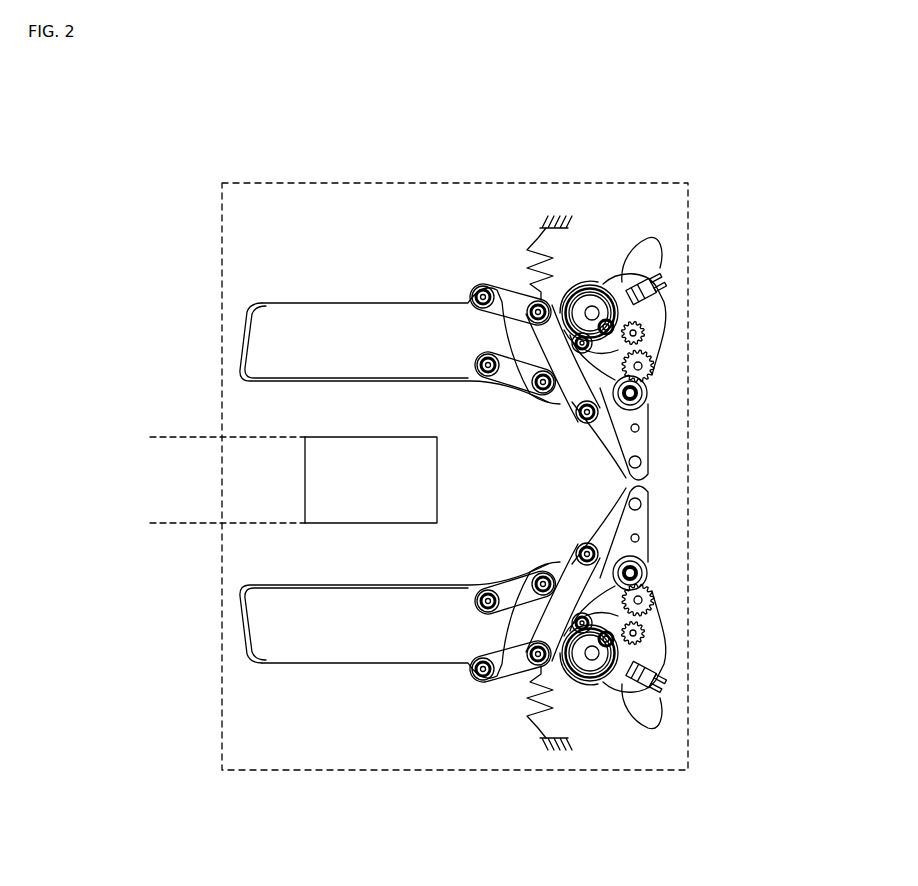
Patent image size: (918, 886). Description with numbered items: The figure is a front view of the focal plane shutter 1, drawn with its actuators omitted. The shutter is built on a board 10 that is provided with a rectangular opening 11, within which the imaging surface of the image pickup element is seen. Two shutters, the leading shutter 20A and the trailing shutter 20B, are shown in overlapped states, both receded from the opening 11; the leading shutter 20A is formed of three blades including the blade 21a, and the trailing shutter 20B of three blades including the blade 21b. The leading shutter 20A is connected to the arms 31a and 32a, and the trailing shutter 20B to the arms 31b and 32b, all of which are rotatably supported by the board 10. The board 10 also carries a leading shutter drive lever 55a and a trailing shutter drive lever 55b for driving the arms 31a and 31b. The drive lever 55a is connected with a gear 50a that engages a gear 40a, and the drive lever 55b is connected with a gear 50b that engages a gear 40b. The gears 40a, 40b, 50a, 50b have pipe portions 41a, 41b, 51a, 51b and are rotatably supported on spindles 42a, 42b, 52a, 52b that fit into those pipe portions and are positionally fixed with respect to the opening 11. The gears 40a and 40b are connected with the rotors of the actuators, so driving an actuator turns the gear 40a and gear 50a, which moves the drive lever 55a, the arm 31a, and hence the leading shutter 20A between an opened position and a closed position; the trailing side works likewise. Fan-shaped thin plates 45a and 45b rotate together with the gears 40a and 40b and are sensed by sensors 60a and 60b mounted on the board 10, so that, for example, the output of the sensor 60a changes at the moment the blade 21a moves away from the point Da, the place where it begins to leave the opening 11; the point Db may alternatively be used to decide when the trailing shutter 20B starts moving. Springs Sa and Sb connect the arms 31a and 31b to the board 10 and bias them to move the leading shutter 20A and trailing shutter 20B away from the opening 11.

The focal plane shutter 1 is at (530, 143).
The board 10 is at (230, 183).
The opening 11 is at (325, 437).
The point Da is at (209, 437).
The point Db is at (209, 523).
The leading shutter 20A is at (400, 698).
The trailing shutter 20B is at (400, 276).
The blade 21a is at (320, 636).
The blade 21b is at (310, 315).
The arm 31a is at (508, 672).
The arm 31b is at (513, 292).
The arm 32a is at (643, 517).
The arm 32b is at (637, 443).
The spring Sa is at (562, 712).
The spring Sb is at (563, 255).
The gear 40a is at (640, 637).
The gear 40b is at (632, 350).
The pipe portion 41a is at (603, 683).
The pipe portion 41b is at (603, 283).
The spindle 42a is at (615, 705).
The spindle 42b is at (625, 270).
The thin plate 45a is at (620, 687).
The thin plate 45b is at (618, 280).
The gear 50a is at (648, 597).
The gear 50b is at (648, 373).
The pipe portion 51a is at (640, 565).
The pipe portion 51b is at (646, 384).
The spindle 52a is at (640, 572).
The spindle 52b is at (640, 393).
The leading shutter drive lever 55a is at (640, 620).
The trailing shutter drive lever 55b is at (635, 347).
The sensor 60a is at (647, 675).
The sensor 60b is at (660, 290).